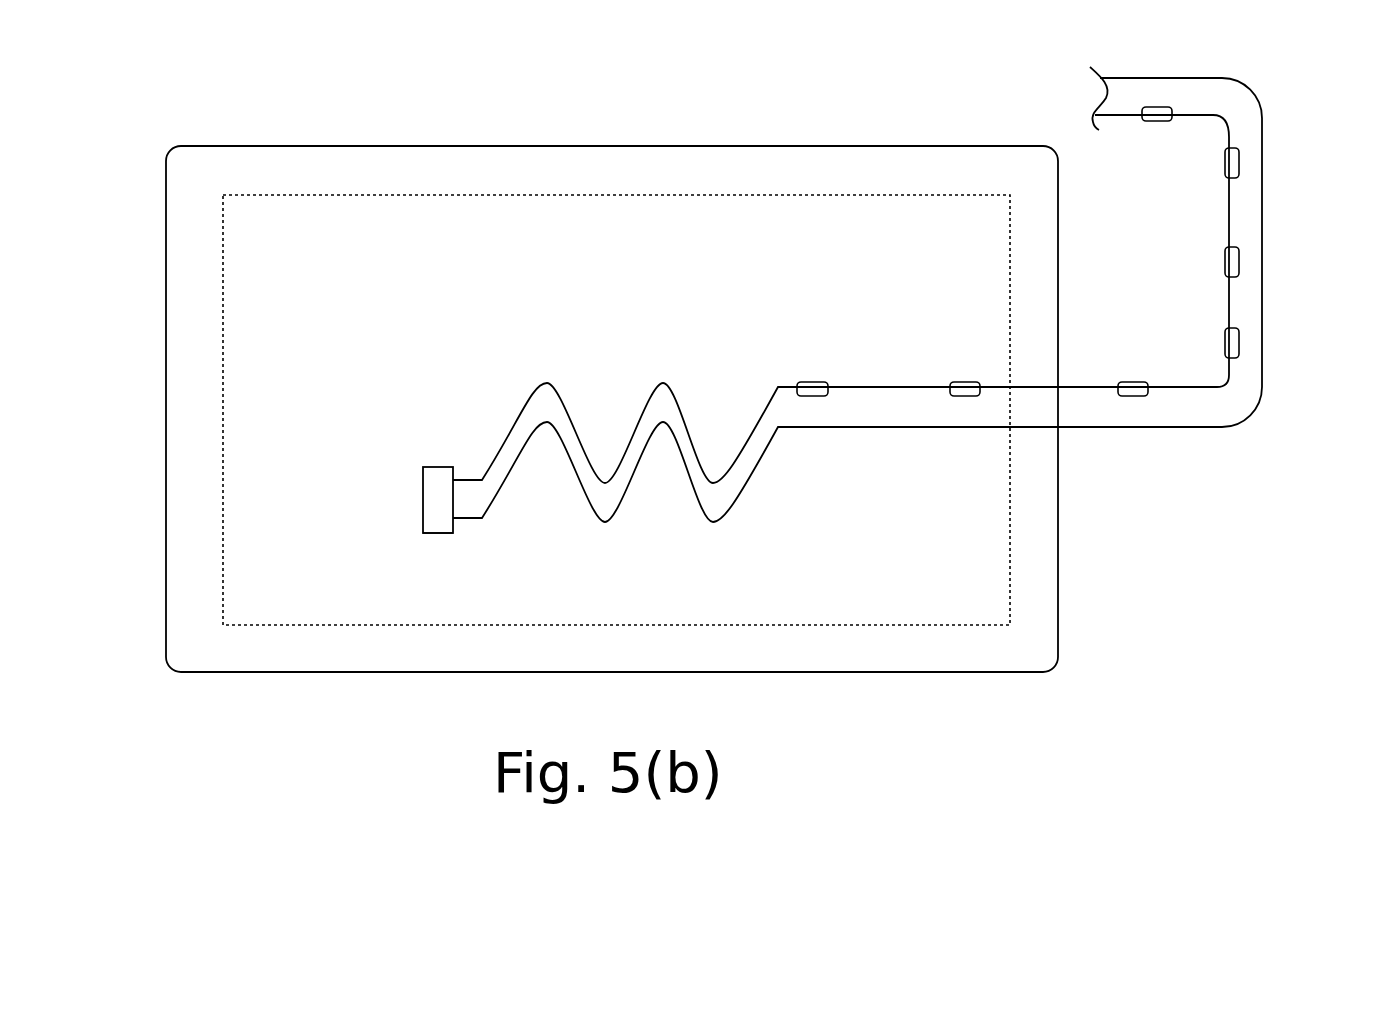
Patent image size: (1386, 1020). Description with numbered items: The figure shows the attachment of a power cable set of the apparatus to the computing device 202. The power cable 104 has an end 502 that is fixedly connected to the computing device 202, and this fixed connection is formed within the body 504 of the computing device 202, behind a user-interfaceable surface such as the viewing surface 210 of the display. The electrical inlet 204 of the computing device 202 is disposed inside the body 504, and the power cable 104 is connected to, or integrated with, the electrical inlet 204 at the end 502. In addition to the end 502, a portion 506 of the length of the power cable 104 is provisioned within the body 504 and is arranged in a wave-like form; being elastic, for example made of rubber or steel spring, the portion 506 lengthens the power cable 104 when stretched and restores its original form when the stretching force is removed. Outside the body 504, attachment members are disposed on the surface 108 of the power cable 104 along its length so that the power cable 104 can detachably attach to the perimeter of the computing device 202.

The computing device 202 is at (166, 172).
The viewing surface 210 is at (223, 625).
The body 504 is at (900, 672).
The end 502 is at (467, 540).
The electrical inlet 204 is at (423, 533).
The portion 506 is at (660, 357).
The surface 108 is at (1252, 413).
The power cable 104 is at (1183, 449).